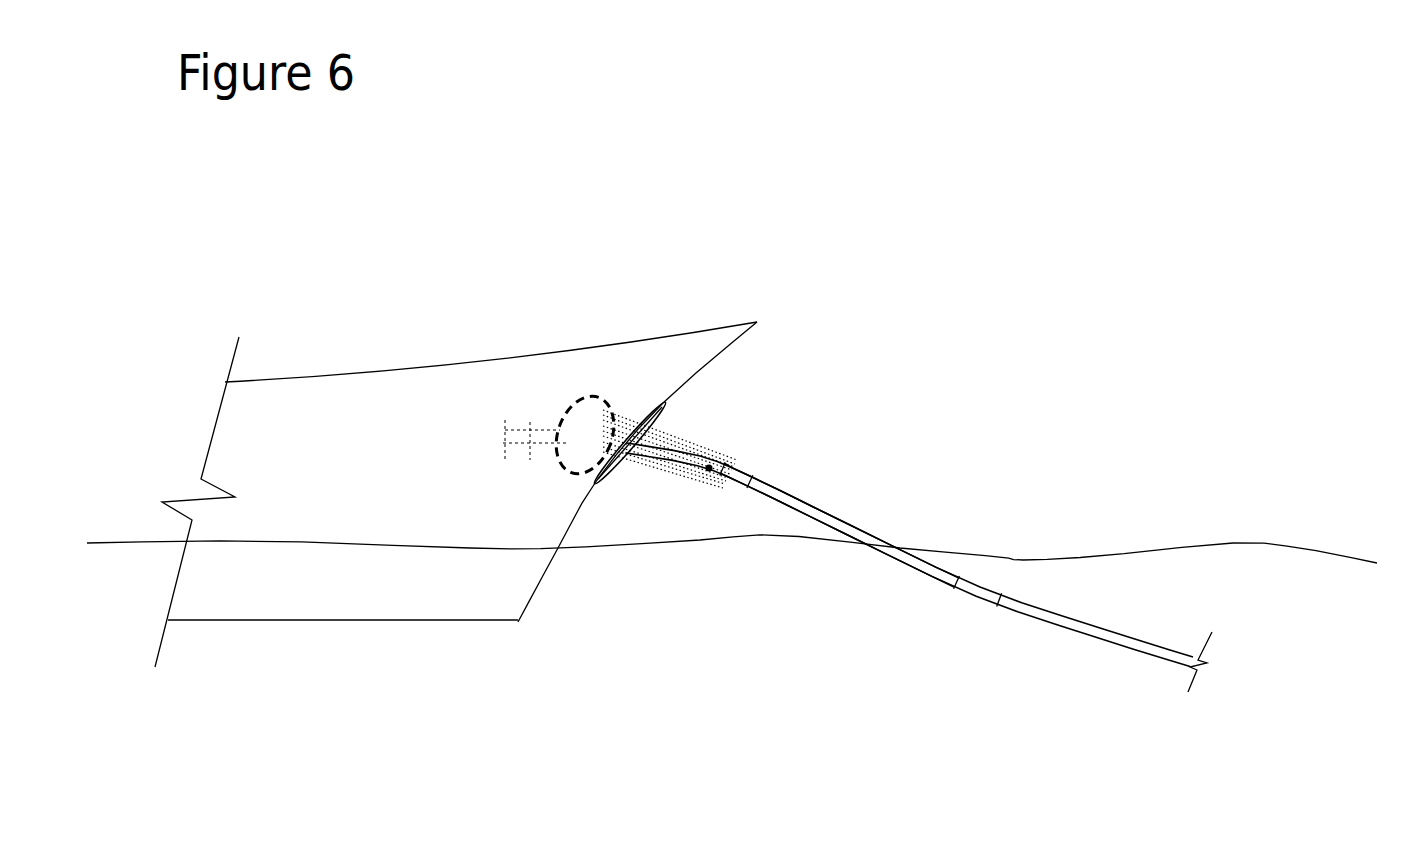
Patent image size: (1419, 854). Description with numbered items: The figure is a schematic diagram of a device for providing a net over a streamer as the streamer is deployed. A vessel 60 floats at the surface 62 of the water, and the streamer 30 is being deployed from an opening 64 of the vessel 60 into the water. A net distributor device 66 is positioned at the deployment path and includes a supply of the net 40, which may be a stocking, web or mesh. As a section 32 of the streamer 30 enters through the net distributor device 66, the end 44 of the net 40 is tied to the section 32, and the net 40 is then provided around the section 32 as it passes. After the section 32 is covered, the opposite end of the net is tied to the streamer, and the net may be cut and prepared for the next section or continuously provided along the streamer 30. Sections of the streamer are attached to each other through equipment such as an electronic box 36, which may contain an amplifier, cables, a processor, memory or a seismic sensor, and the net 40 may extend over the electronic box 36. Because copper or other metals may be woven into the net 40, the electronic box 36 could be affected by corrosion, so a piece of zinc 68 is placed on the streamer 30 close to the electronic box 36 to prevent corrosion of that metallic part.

The vessel 60 is at (362, 241).
The surface of the water 62 is at (1023, 560).
The section 32 is at (532, 427).
The net distributor device 66 is at (583, 393).
The opening 64 is at (663, 413).
The net 40 is at (683, 443).
The second end 44 is at (733, 460).
The electronic box 36 is at (752, 477).
The streamer 30 is at (828, 513).
The piece of zinc 68 is at (709, 468).